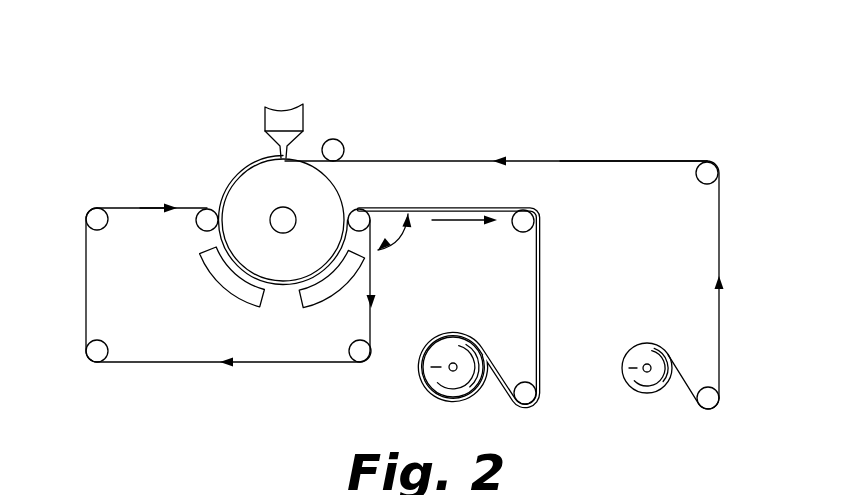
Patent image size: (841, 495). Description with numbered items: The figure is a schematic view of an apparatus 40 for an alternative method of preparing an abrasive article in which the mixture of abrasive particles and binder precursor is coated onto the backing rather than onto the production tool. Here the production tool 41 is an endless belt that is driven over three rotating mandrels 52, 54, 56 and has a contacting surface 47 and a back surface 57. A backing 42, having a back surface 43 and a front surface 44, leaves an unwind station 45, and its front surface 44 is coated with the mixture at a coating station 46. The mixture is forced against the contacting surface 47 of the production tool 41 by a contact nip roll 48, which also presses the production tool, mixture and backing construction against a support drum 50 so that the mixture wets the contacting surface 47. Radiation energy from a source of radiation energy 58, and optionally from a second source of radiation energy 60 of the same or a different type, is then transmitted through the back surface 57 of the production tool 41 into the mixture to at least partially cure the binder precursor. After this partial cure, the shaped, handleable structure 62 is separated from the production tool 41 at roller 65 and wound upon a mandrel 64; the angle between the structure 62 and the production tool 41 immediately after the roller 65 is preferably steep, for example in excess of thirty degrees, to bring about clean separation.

The apparatus 40 is at (437, 80).
The production tool 41 is at (158, 370).
The backing 42 is at (582, 156).
The back surface 43 is at (655, 166).
The front surface 44 is at (543, 157).
The unwind station 45 is at (627, 377).
The coating station 46 is at (303, 118).
The contacting surface 47 is at (127, 205).
The contact nip roll 48 is at (207, 208).
The support drum 50 is at (250, 180).
The rotating mandrel 52 is at (358, 363).
The rotating mandrel 54 is at (88, 352).
The rotating mandrel 56 is at (97, 207).
The back surface 57 is at (147, 210).
The source of radiation energy 58 is at (213, 283).
The second source of radiation energy 60 is at (332, 307).
The shaped, handleable structure 62 is at (547, 292).
The mandrel 64 is at (427, 370).
The roller 65 is at (360, 213).